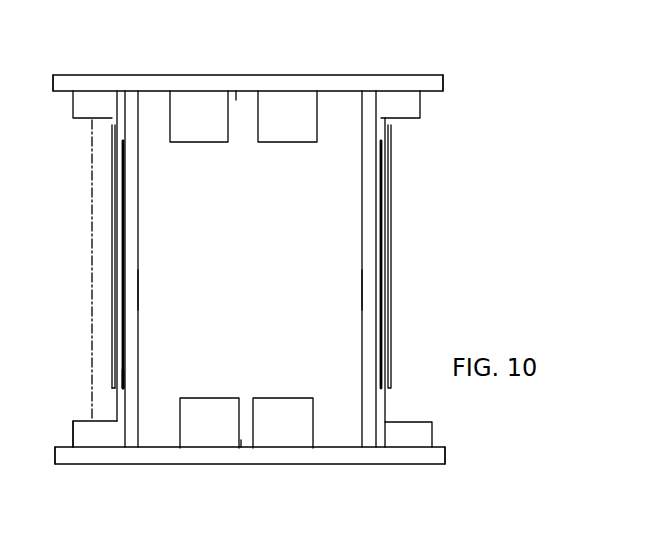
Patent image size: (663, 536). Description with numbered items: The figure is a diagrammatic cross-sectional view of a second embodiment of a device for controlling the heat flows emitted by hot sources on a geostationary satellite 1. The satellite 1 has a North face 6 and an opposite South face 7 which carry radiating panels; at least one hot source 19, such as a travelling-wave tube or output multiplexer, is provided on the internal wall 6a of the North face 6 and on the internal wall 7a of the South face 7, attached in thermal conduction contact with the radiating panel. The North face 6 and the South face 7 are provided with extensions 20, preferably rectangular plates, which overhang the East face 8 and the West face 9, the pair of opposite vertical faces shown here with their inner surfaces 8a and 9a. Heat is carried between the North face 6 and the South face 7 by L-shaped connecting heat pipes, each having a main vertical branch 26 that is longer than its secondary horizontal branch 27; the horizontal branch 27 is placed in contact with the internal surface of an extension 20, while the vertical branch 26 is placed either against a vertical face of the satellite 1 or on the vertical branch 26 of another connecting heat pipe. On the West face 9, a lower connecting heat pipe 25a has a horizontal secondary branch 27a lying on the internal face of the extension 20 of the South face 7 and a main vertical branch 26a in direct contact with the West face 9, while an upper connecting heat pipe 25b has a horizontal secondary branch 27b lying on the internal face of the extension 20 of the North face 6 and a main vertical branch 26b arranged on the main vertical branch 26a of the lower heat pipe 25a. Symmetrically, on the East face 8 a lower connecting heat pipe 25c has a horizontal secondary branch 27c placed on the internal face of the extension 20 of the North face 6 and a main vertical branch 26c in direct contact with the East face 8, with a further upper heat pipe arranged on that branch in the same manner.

The geostationary satellite 1 is at (356, 53).
The North face 6 is at (189, 77).
The internal wall of the North face 6a is at (241, 447).
The South face 7 is at (220, 459).
The internal wall of the South face 7a is at (236, 92).
The East face 8 is at (362, 343).
The inner face of right upright member 8a is at (361, 288).
The West face 9 is at (137, 222).
The inner face of left upright member 9a is at (138, 292).
The hot source 19 is at (193, 130).
The extension 20 is at (73, 80).
The lower connecting heat pipe 25a is at (118, 460).
The upper connecting heat pipe 25b is at (86, 130).
The lower connecting heat pipe 25c is at (406, 123).
The main vertical branch 26 is at (123, 141).
The main vertical branch of the lower heat pipe 26a is at (120, 387).
The main vertical branch of the upper heat pipe 26b is at (111, 206).
The main vertical branch of the lower heat pipe 26c is at (378, 256).
The secondary horizontal branch 27 is at (83, 430).
The horizontal secondary branch of the lower heat pipe 27a is at (73, 449).
The horizontal secondary branch of the upper heat pipe 27b is at (90, 110).
The horizontal secondary branch of the lower heat pipe 27c is at (408, 103).